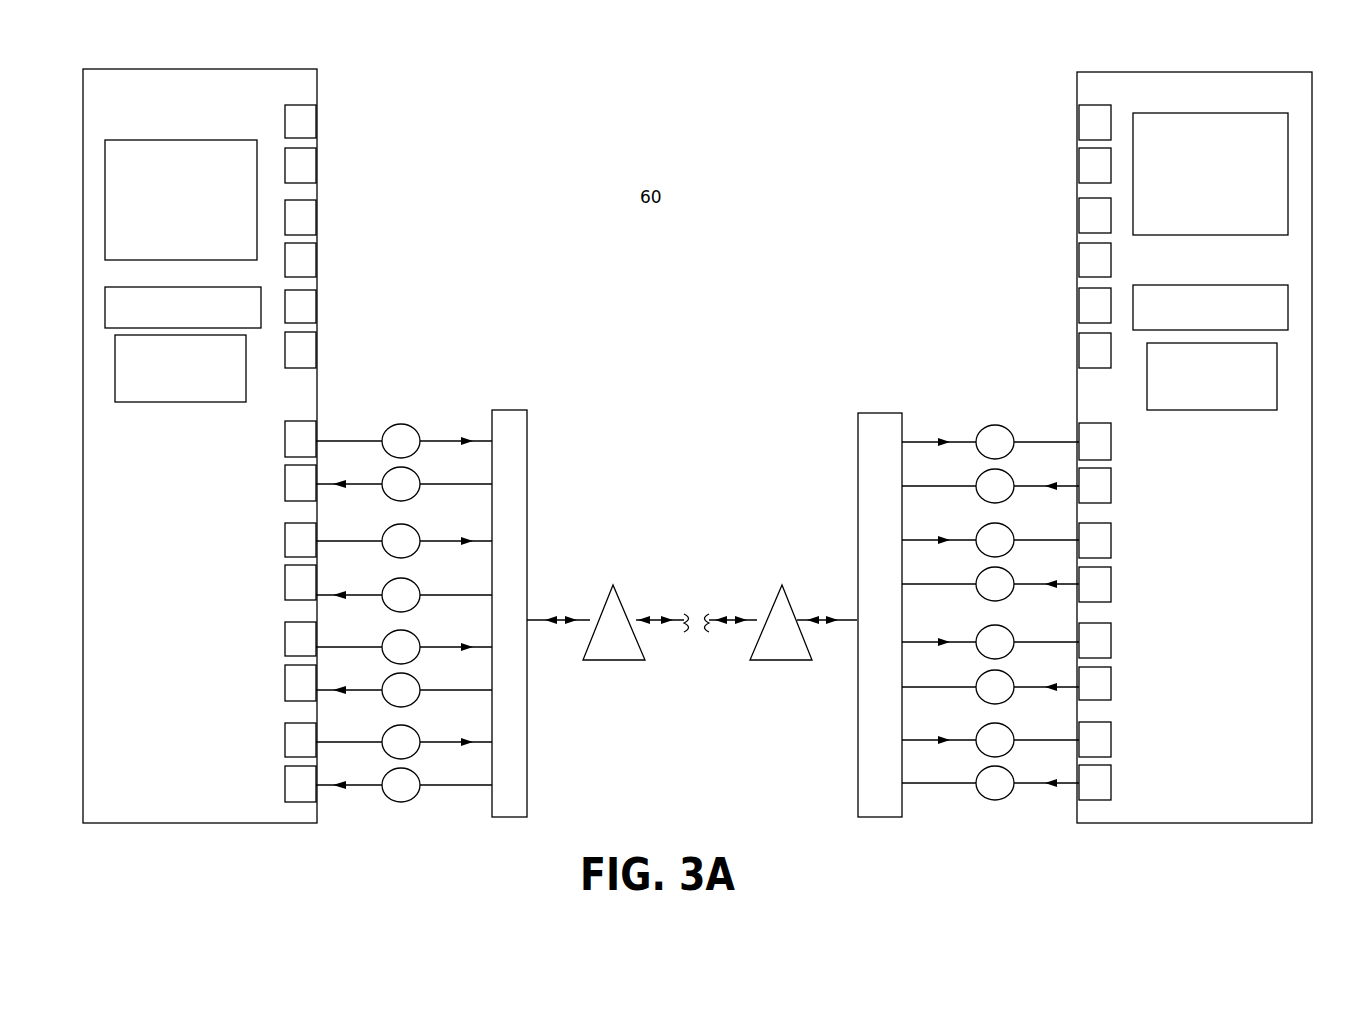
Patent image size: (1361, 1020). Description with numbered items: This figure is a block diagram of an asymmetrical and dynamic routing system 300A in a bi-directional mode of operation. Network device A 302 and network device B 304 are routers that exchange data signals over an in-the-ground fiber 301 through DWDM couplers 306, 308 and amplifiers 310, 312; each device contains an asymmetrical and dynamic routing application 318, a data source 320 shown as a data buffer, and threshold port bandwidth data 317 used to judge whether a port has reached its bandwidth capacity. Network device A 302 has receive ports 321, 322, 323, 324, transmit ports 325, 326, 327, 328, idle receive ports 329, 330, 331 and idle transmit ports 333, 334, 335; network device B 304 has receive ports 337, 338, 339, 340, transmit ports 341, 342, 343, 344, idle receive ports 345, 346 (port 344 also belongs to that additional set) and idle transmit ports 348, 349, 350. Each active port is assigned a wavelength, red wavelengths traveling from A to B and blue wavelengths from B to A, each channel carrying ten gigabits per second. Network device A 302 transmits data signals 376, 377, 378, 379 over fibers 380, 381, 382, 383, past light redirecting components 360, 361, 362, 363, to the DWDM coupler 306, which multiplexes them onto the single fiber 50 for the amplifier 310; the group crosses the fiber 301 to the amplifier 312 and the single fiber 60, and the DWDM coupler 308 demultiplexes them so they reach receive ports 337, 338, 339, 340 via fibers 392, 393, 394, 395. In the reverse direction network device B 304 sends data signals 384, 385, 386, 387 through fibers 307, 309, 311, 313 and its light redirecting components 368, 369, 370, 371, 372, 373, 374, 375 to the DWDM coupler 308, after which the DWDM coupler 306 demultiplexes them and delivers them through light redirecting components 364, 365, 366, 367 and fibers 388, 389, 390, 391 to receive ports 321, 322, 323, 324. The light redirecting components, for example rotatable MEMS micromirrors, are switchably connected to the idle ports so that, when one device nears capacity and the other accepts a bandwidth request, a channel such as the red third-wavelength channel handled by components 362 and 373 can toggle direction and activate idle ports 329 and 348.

The asymmetrical and dynamic routing system 300A is at (695, 84).
The network device A 302 is at (205, 69).
The network device B 304 is at (1195, 72).
The DWDM coupler 306 is at (508, 410).
The DWDM coupler 308 is at (878, 415).
The in the ground fiber 301 is at (683, 615).
The amplifier 310 is at (598, 660).
The amplifier 312 is at (782, 660).
The single fiber 50 is at (561, 618).
The single fiber 60 is at (821, 618).
The threshold port bandwidth data 317 is at (115, 347).
The asymmetrical and dynamic routing application 318 is at (183, 140).
The data source 320 is at (192, 287).
The receive port 321 is at (285, 784).
The receive port 322 is at (285, 683).
The receive port 323 is at (285, 582).
The receive port 324 is at (285, 483).
The transmit port 325 is at (285, 740).
The transmit port 326 is at (285, 639).
The transmit port 327 is at (285, 540).
The transmit port 328 is at (285, 440).
The idle receive port 329 is at (318, 345).
The idle receive port 330 is at (318, 258).
The idle receive port 331 is at (318, 165).
The idle transmit port 333 is at (318, 303).
The idle transmit port 334 is at (318, 215).
The idle transmit port 335 is at (318, 122).
The receive port 337 is at (1111, 740).
The receive port 338 is at (1111, 640).
The receive port 339 is at (1111, 540).
The receive port 340 is at (1111, 440).
The transmit port 341 is at (1111, 782).
The transmit port 342 is at (1111, 684).
The transmit port 343 is at (1111, 584).
The transmit port 344 is at (1080, 300).
The idle receive port 345 is at (1080, 210).
The idle receive port 346 is at (1080, 117).
The idle transmit port 348 is at (1080, 345).
The idle transmit port 349 is at (1080, 252).
The idle transmit port 350 is at (1080, 160).
The light redirecting component 360 is at (384, 756).
The light redirecting component 361 is at (384, 662).
The light redirecting component 362 is at (388, 558).
The light redirecting component 363 is at (384, 456).
The light redirecting component 364 is at (398, 800).
The light redirecting component 365 is at (407, 703).
The light redirecting component 366 is at (411, 609).
The light redirecting component 367 is at (410, 498).
The light redirecting component 368 is at (993, 800).
The light redirecting component 369 is at (976, 752).
The light redirecting component 370 is at (977, 697).
The light redirecting component 371 is at (975, 655).
The light redirecting component 372 is at (975, 594).
The light redirecting component 373 is at (978, 552).
The light redirecting component 374 is at (978, 496).
The light redirecting component 375 is at (998, 425).
The data signal 376 is at (463, 740).
The data signal 377 is at (463, 645).
The data signal 378 is at (463, 539).
The data signal 379 is at (467, 434).
The fiber 380 is at (340, 740).
The fiber 381 is at (340, 645).
The fiber 382 is at (340, 539).
The fiber 383 is at (340, 438).
The data signal 384 is at (342, 790).
The data signal 385 is at (342, 696).
The data signal 386 is at (344, 600).
The data signal 387 is at (341, 488).
The fiber 388 is at (430, 783).
The fiber 389 is at (430, 688).
The fiber 390 is at (432, 594).
The fiber 391 is at (432, 482).
The fiber 392 is at (1033, 745).
The fiber 393 is at (1033, 646).
The fiber 394 is at (1033, 545).
The fiber 395 is at (1033, 446).
The fiber 307 is at (1027, 780).
The fiber 309 is at (1027, 684).
The fiber 311 is at (1027, 581).
The fiber 313 is at (1027, 483).